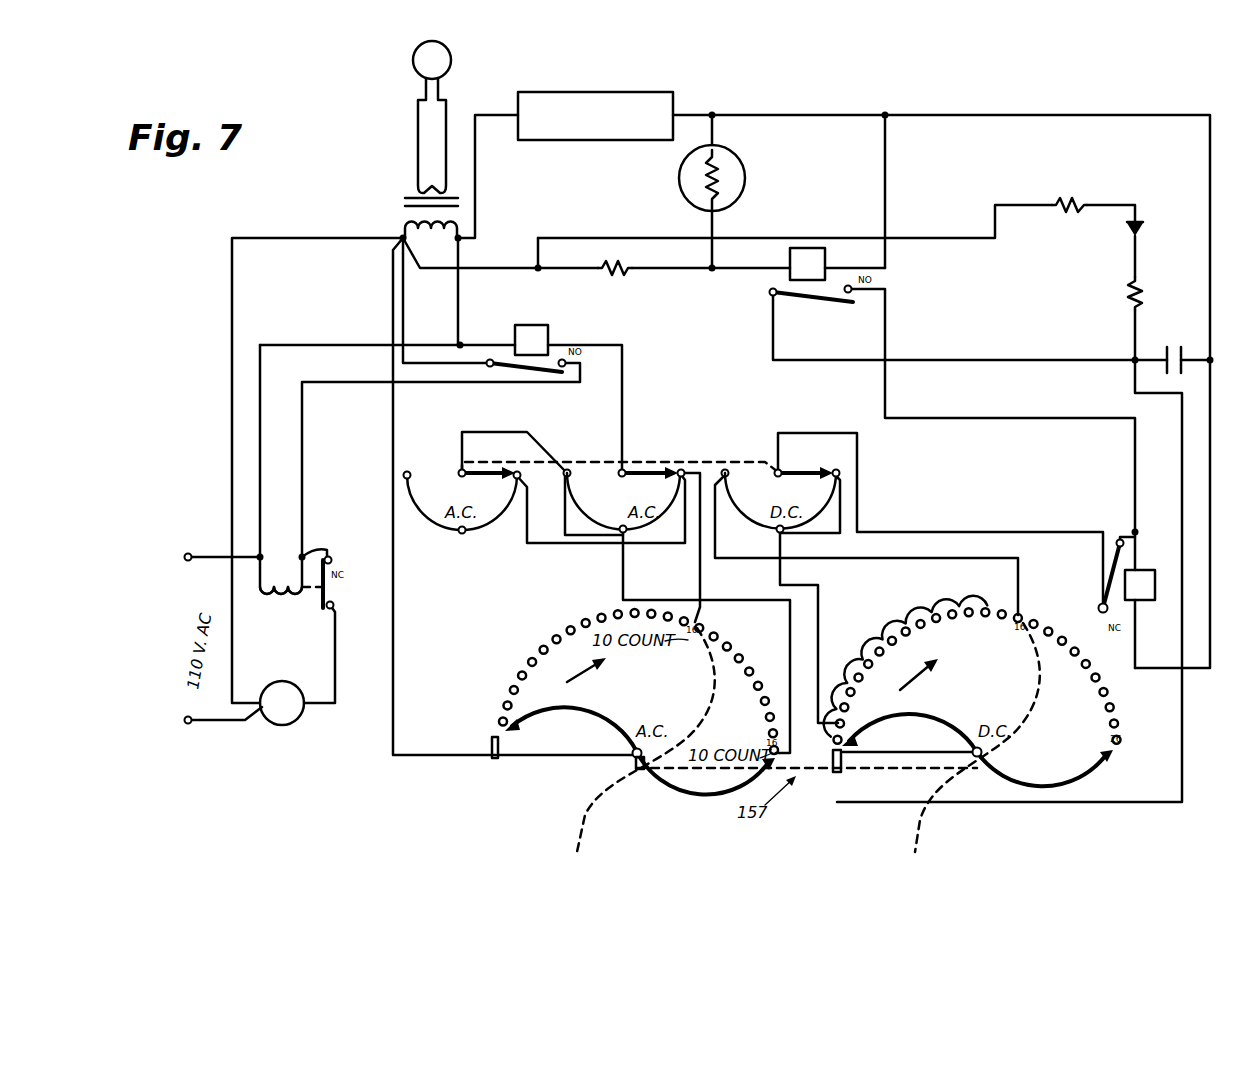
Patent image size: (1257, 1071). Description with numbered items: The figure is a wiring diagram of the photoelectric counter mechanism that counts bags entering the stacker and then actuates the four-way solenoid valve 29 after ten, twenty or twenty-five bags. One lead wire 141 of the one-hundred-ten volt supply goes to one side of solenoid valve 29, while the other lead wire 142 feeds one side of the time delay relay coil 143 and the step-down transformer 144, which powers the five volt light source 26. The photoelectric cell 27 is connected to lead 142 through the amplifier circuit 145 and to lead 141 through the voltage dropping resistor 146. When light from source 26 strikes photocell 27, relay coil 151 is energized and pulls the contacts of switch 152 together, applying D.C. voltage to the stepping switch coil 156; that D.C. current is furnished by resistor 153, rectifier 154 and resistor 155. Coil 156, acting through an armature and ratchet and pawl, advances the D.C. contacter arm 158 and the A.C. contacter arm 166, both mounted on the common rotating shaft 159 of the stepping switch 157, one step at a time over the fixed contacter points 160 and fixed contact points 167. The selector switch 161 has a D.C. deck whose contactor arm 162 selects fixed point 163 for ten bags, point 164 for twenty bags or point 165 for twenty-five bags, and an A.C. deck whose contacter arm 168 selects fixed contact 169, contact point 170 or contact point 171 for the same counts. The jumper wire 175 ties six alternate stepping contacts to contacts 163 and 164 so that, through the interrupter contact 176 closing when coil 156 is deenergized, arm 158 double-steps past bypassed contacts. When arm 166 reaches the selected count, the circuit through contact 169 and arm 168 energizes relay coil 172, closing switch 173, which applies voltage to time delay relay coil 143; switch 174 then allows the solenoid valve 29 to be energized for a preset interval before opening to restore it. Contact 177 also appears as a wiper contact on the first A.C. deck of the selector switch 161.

The light source 26 is at (413, 60).
The photoelectric cell 27 is at (745, 178).
The solenoid valve 29 is at (296, 725).
The 110 volt lead wire 141 is at (188, 725).
The 110 volt lead wire 142 is at (188, 552).
The time delay relay coil 143 is at (281, 603).
The step-down transformer 144 is at (404, 201).
The amplifier circuit 145 is at (672, 92).
The voltage dropping resistor 146 is at (610, 276).
The relay coil 151 is at (790, 261).
The switch 152 is at (812, 304).
The resistor 153 is at (1070, 200).
The rectifier 154 is at (1145, 229).
The resistor 155 is at (1128, 295).
The stepping switch coil 156 is at (1155, 588).
The D.C. stepping switch 157 is at (1174, 346).
The switch contacter arm 158 is at (893, 716).
The rotating shaft 159 is at (817, 780).
The contacter points 160 is at (1113, 709).
The selector switch 161 is at (622, 463).
The contactor arm 162 is at (800, 476).
The fixed point 163 is at (836, 469).
The fixed point 164 is at (777, 532).
The fixed point 165 is at (728, 470).
The contacter arm 166 is at (556, 704).
The fixed contact points 167 is at (530, 655).
The contacter arm 168 is at (650, 468).
The fixed contact 169 is at (676, 469).
The contact point 170 is at (623, 527).
The contact point 171 is at (567, 470).
The relay coil 172 is at (531, 323).
The switch 173 is at (530, 373).
The switch 174 is at (336, 586).
The jumper wire 175 is at (860, 650).
The interrupter contact 176 is at (1108, 580).
The wiper contact 177 is at (480, 479).